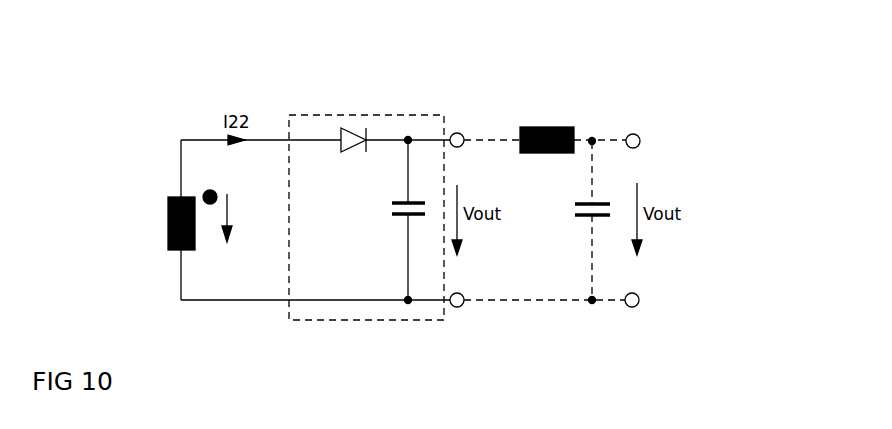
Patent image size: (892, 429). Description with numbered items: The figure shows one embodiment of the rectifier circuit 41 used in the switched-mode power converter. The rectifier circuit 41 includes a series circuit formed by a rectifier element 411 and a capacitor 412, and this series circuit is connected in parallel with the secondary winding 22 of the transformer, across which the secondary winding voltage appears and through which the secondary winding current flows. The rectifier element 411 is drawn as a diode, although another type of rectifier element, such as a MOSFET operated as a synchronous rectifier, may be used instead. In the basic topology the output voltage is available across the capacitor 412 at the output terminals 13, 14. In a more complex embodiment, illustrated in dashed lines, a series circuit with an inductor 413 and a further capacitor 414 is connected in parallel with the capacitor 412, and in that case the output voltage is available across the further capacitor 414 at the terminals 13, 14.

The output terminal 13 is at (462, 133).
The output terminal 14 is at (460, 307).
The secondary winding 22 is at (170, 197).
The rectifier circuit 41 is at (358, 113).
The rectifier element 411 is at (352, 155).
The capacitor 412 is at (402, 218).
The inductor 413 is at (552, 155).
The further capacitor 414 is at (583, 218).